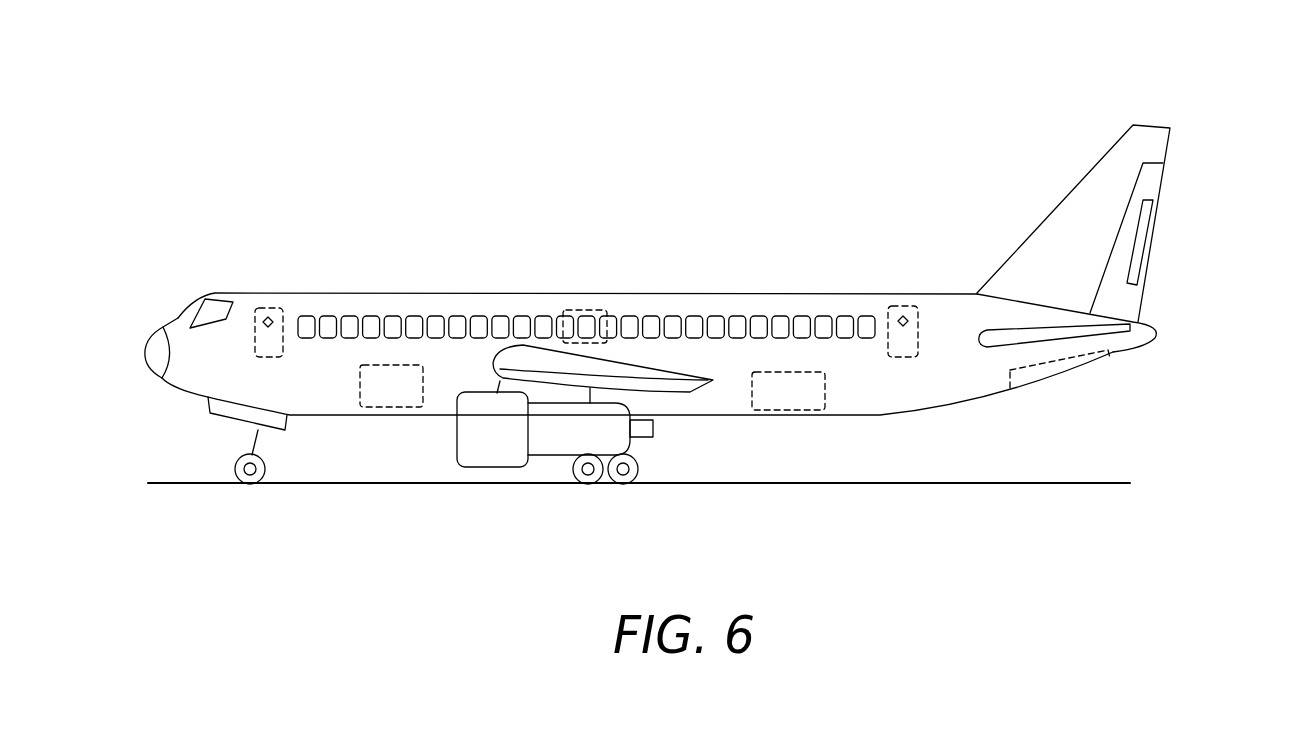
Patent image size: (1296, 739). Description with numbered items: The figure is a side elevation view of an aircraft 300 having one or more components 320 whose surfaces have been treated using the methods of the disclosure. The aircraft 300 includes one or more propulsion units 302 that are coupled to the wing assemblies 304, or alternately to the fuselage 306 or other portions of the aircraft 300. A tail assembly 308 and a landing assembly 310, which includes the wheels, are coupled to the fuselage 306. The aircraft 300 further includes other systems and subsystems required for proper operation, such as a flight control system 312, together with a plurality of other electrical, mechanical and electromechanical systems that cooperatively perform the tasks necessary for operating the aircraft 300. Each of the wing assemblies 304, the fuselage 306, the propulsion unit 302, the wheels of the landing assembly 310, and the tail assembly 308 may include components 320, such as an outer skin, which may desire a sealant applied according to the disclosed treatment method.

The aircraft 300 is at (352, 109).
The propulsion unit 302 is at (505, 453).
The wing assembly 304 is at (675, 390).
The fuselage 306 is at (633, 293).
The tail assembly 308 is at (1183, 294).
The landing assembly 310 is at (242, 483).
The flight control system 312 is at (192, 330).
The component 320 is at (381, 430).